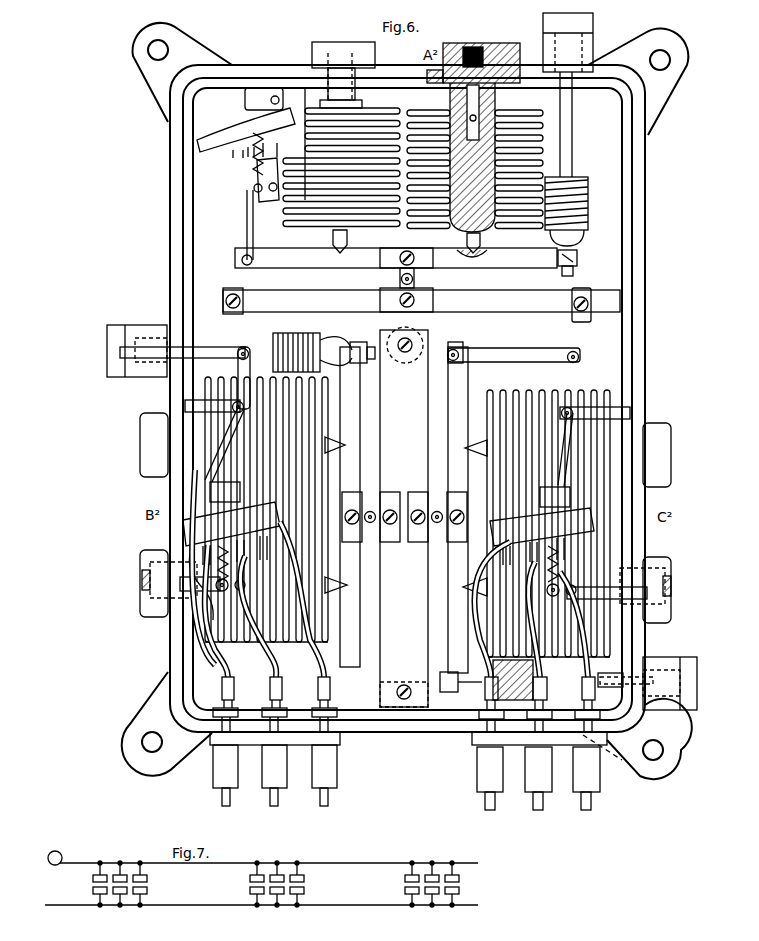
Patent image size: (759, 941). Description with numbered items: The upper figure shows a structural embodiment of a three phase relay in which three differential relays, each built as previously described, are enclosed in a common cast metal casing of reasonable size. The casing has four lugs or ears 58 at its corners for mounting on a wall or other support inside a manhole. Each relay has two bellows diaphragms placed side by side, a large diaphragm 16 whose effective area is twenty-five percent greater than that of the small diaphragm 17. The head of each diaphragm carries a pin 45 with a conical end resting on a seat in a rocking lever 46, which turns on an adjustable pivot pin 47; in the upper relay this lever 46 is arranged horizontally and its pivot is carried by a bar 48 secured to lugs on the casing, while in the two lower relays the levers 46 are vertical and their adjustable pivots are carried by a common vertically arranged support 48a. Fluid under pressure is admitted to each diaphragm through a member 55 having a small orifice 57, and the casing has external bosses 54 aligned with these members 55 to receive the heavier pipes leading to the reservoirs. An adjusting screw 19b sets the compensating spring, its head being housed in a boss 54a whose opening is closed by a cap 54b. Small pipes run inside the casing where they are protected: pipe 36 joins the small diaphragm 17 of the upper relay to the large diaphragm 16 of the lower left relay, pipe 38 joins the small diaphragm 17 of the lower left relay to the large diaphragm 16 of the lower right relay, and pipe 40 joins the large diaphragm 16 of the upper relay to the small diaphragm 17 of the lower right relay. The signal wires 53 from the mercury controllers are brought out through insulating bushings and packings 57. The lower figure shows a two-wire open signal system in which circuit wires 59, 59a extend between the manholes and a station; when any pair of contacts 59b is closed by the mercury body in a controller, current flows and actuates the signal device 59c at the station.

In FIG. 6, the large bellows diaphragm 16 is at (542, 123).
In FIG. 6, the small bellows diaphragm 17 is at (373, 116).
In FIG. 6, the adjusting screw 19b is at (548, 686).
In FIG. 6, the pipe 36 is at (195, 182).
In FIG. 6, the pipe 38 is at (190, 663).
In FIG. 6, the pipe 40 is at (623, 350).
In FIG. 6, the pin 45 is at (480, 238).
In FIG. 6, the rocking lever 46 is at (295, 262).
In FIG. 6, the adjustable pivot pin 47 is at (414, 280).
In FIG. 6, the bar 48 is at (460, 310).
In FIG. 6, the vertically arranged support 48a is at (404, 517).
In FIG. 6, the signal wires 53 is at (592, 800).
In FIG. 6, the external bosses 54 is at (497, 45).
In FIG. 6, the bosses 54a is at (657, 663).
In FIG. 6, the caps 54b is at (110, 353).
In FIG. 6, the fluid admitting member 55 is at (498, 108).
In FIG. 6, the orifice 57 is at (463, 100).
In FIG. 6, the lugs or ears 58 is at (658, 107).
In FIG. 7, the circuit wire 59 is at (370, 863).
In FIG. 7, the circuit wire 59a is at (365, 905).
In FIG. 7, the pair of contacts 59b is at (460, 887).
In FIG. 7, the signal device 59c is at (55, 851).